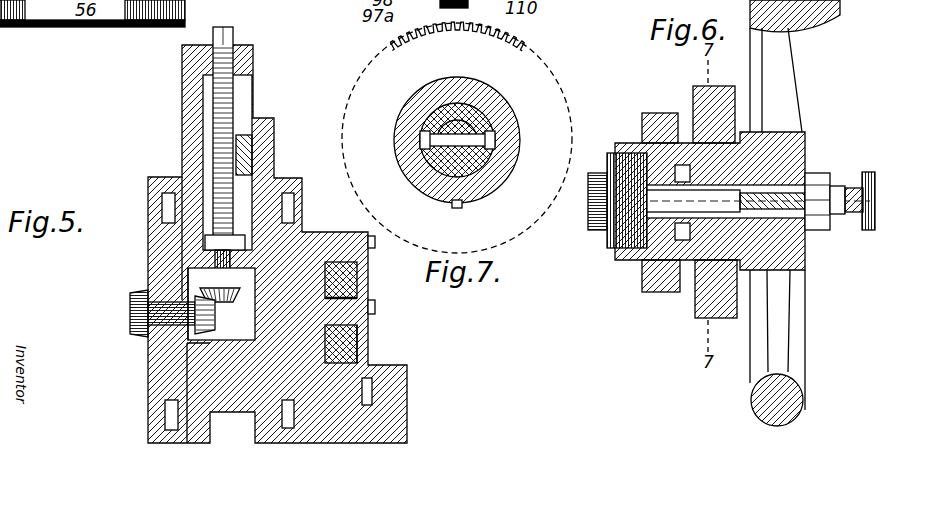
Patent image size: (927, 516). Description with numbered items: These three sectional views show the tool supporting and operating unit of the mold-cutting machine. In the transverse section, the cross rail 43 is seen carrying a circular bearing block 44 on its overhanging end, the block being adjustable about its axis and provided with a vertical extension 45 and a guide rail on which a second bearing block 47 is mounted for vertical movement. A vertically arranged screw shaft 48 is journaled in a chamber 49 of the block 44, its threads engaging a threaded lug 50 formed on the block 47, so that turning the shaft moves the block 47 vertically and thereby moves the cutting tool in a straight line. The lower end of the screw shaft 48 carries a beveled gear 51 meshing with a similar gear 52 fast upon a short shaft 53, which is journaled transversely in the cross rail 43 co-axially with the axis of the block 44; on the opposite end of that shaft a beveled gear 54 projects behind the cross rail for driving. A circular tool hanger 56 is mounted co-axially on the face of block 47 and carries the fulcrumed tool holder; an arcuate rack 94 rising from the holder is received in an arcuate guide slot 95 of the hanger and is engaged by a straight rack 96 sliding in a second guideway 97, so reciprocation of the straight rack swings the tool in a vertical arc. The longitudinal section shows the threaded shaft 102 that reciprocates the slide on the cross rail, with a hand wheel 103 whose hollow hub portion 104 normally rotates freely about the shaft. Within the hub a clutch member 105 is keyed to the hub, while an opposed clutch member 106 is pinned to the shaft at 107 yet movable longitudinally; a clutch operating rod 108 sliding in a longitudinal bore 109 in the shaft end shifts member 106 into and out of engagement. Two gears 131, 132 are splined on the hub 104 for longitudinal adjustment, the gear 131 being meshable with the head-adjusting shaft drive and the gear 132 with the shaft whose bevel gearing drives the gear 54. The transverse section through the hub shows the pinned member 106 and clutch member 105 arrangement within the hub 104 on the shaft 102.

In FIG. 5, the cross rail 43 is at (152, 248).
In FIG. 5, the circular bearing block 44 is at (205, 391).
In FIG. 5, the vertical extension 45 is at (185, 136).
In FIG. 5, the second bearing block 47 is at (273, 124).
In FIG. 5, the screw shaft 48 is at (235, 108).
In FIG. 5, the chamber 49 is at (200, 92).
In FIG. 5, the threaded lug 50 is at (250, 160).
In FIG. 5, the beveled gear 51 is at (223, 305).
In FIG. 5, the beveled gear 52 is at (217, 320).
In FIG. 5, the short shaft 53 is at (172, 300).
In FIG. 5, the beveled gear 54 is at (138, 309).
In FIG. 5, the circular tool hanger 56 is at (328, 234).
In FIG. 5, the arcuate rack 94 is at (350, 333).
In FIG. 5, the arcuate guide slot 95 is at (370, 352).
In FIG. 5, the straight rack 96 is at (350, 274).
In FIG. 5, the second guideway 97 is at (356, 300).
In FIG. 6, the threaded shaft 102 is at (796, 150).
In FIG. 6, the hand wheel 103 is at (805, 102).
In FIG. 7, the hollow hub portion 104 is at (422, 200).
In FIG. 6, the hollow hub portion 104 is at (615, 258).
In FIG. 6, the clutch member 105 is at (655, 167).
In FIG. 7, the clutch member 106 is at (468, 160).
In FIG. 6, the clutch member 106 is at (700, 275).
In FIG. 7, the pin 107 is at (493, 133).
In FIG. 6, the pin 107 is at (758, 202).
In FIG. 6, the clutch operating rod 108 is at (855, 186).
In FIG. 6, the longitudinal bore 109 is at (790, 220).
In FIG. 6, the gear 131 is at (648, 113).
In FIG. 7, the gear 132 is at (457, 137).
In FIG. 6, the gear 132 is at (693, 92).